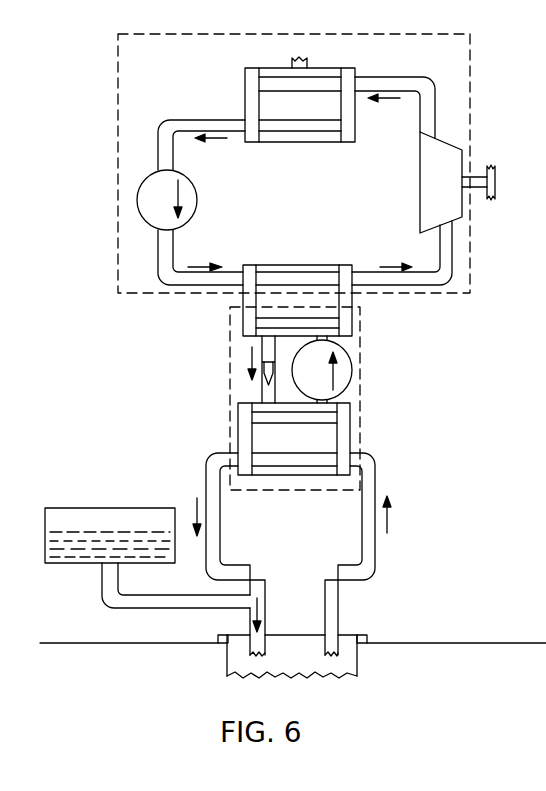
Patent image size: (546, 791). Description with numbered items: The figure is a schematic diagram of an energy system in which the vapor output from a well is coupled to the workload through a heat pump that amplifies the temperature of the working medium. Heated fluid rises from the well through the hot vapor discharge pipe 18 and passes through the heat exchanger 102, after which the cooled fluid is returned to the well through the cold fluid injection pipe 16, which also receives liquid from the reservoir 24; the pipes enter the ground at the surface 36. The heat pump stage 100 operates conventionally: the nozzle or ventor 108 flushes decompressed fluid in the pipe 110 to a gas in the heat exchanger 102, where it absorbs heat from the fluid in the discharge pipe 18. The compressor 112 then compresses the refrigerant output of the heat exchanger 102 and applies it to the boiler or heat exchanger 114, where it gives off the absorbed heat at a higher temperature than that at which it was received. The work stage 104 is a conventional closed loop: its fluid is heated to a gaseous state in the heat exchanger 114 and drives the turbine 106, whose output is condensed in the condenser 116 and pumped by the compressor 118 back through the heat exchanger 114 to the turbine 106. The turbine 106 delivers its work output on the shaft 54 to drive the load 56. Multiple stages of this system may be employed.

The work stage 104 is at (290, 34).
The condenser 116 is at (270, 68).
The turbine 106 is at (420, 188).
The shaft 54 is at (478, 177).
The load 56 is at (495, 188).
The compressor 118 is at (186, 176).
The heat exchanger 114 is at (306, 265).
The heat pump stage 100 is at (230, 344).
The pipe 110 is at (262, 348).
The nozzle 108 is at (265, 383).
The compressor 112 is at (352, 366).
The heat exchanger 102 is at (238, 413).
The reservoir 24 is at (128, 508).
The cold fluid injection pipe 16 is at (266, 620).
The hot vapor discharge pipe 18 is at (340, 620).
The ground surface 36 is at (220, 635).